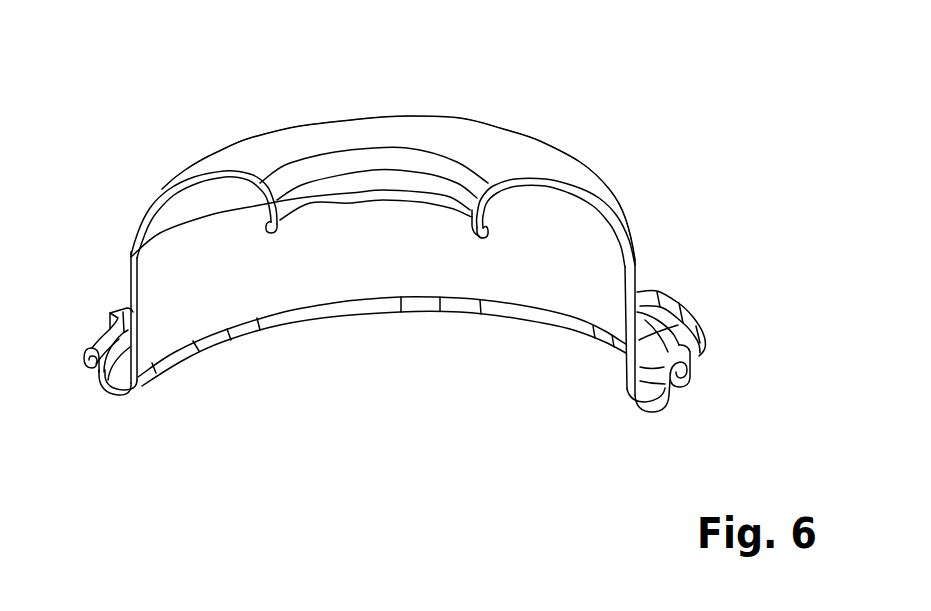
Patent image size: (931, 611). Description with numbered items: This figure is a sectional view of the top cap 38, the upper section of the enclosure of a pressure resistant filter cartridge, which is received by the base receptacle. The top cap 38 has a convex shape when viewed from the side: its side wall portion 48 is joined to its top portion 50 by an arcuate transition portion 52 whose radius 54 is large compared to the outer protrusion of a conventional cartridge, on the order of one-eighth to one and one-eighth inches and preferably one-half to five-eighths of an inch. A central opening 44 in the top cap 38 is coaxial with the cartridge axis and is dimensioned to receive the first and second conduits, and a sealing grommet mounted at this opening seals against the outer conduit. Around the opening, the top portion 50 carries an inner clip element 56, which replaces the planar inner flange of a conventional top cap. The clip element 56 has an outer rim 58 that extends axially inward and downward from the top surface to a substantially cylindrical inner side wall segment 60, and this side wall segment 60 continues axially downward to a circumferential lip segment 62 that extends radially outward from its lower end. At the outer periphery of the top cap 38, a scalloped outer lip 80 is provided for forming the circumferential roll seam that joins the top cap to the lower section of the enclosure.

The top cap 38 is at (373, 213).
The central opening 44 is at (366, 210).
The side wall portion 48 is at (130, 294).
The top portion 50 is at (391, 116).
The arcuate transition portion 52 is at (150, 202).
The radius 54 is at (172, 190).
The inner clip element 56 is at (482, 202).
The outer rim 58 is at (298, 172).
The inner side wall segment 60 is at (292, 199).
The circumferential lip segment 62 is at (486, 235).
The scalloped outer lip 80 is at (683, 305).